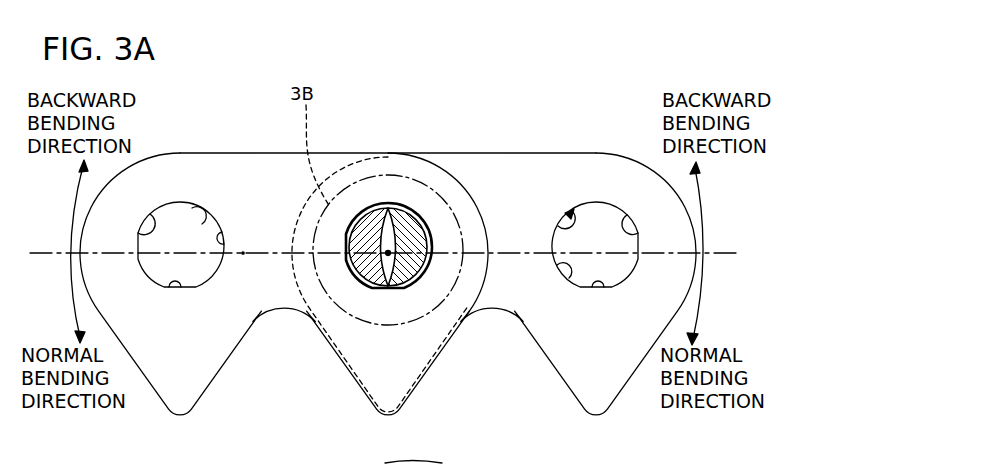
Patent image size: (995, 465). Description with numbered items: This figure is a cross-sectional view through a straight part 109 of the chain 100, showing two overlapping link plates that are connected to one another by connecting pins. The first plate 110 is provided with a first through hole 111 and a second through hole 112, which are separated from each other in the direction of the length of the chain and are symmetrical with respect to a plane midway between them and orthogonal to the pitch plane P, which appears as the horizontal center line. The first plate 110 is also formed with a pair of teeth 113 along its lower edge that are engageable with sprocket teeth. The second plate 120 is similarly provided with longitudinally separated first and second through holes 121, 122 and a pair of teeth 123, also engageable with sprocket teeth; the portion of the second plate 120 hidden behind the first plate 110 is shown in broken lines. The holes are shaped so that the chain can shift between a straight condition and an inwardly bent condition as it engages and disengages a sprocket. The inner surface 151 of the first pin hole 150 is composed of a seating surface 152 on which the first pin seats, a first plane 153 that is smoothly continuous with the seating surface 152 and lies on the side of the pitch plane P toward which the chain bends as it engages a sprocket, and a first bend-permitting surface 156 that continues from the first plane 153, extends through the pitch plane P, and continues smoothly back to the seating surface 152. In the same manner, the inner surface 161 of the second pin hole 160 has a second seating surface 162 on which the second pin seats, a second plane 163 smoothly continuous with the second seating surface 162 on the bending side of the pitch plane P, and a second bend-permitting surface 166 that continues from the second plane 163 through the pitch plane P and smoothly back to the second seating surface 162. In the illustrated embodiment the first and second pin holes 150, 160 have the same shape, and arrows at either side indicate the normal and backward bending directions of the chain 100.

The chain 100 is at (391, 197).
The straight part 109 is at (552, 92).
The first plate 110 is at (140, 389).
The first through hole 111 is at (413, 206).
The second through hole 112 is at (206, 199).
The teeth 113 is at (358, 362).
The second plate 120 is at (640, 389).
The first through hole 121 is at (601, 196).
The second through hole 122 is at (458, 178).
The teeth 123 is at (585, 378).
The first pin hole 150 is at (175, 222).
The inner surface 151 is at (194, 203).
The seating surface 152 is at (150, 214).
The first plane 153 is at (172, 290).
The first bend-permitting surface 156 is at (222, 232).
The second pin hole 160 is at (423, 210).
The inner surface 161 is at (558, 226).
The second seating surface 162 is at (627, 215).
The second plane 163 is at (598, 292).
The second bend-permitting surface 166 is at (560, 280).
The pitch plane P is at (243, 254).